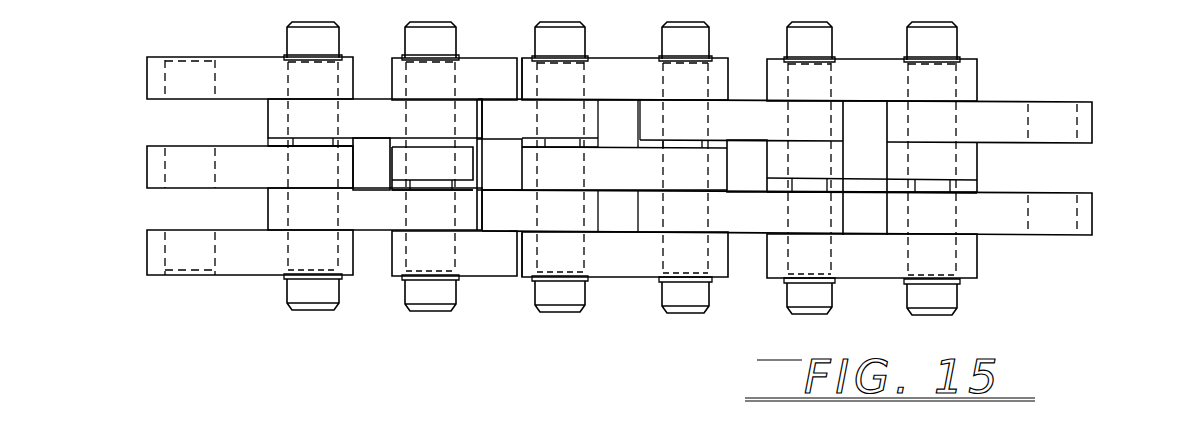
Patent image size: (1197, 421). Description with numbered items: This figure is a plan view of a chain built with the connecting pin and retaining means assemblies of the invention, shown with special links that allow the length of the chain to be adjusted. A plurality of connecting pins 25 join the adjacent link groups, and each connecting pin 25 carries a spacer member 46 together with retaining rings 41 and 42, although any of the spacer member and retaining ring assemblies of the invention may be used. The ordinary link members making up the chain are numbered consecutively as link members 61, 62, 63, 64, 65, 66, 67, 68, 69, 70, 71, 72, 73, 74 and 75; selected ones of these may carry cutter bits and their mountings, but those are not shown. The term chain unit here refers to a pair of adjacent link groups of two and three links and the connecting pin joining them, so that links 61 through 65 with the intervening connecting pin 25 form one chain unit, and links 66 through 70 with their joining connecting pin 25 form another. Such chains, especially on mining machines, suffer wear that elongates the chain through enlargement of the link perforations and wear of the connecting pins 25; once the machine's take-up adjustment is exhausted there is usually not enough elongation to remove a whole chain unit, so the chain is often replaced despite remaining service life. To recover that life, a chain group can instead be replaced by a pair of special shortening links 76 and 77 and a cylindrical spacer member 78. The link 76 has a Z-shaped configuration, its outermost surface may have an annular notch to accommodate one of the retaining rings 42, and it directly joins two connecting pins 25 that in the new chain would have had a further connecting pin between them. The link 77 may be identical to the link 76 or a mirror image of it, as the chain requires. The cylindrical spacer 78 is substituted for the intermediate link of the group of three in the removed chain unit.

The connecting pin 25 is at (312, 311).
The retaining ring 41 is at (285, 280).
The retaining ring 42 is at (285, 57).
The spacer member 46 is at (268, 140).
The link member 61 is at (1093, 123).
The link member 62 is at (1093, 221).
The link member 63 is at (988, 76).
The link member 64 is at (972, 165).
The link member 65 is at (968, 252).
The link member 66 is at (850, 123).
The link member 67 is at (843, 213).
The link member 68 is at (718, 80).
The link member 69 is at (718, 160).
The link member 70 is at (718, 258).
The link member 71 is at (373, 112).
The link member 72 is at (368, 232).
The link member 73 is at (232, 86).
The link member 74 is at (242, 172).
The link member 75 is at (245, 280).
The shortening link 76 is at (500, 72).
The shortening link 77 is at (517, 282).
The cylindrical spacer member 78 is at (466, 162).